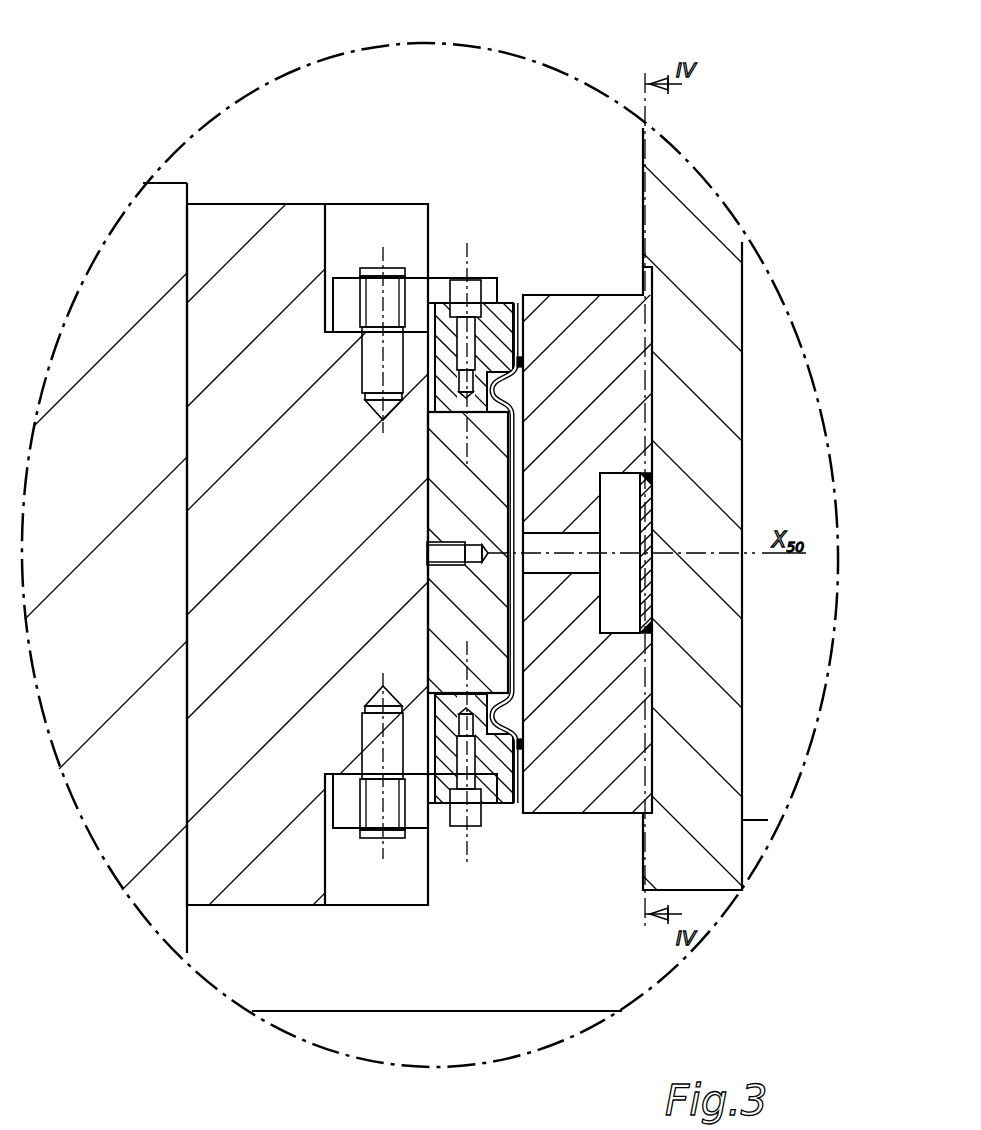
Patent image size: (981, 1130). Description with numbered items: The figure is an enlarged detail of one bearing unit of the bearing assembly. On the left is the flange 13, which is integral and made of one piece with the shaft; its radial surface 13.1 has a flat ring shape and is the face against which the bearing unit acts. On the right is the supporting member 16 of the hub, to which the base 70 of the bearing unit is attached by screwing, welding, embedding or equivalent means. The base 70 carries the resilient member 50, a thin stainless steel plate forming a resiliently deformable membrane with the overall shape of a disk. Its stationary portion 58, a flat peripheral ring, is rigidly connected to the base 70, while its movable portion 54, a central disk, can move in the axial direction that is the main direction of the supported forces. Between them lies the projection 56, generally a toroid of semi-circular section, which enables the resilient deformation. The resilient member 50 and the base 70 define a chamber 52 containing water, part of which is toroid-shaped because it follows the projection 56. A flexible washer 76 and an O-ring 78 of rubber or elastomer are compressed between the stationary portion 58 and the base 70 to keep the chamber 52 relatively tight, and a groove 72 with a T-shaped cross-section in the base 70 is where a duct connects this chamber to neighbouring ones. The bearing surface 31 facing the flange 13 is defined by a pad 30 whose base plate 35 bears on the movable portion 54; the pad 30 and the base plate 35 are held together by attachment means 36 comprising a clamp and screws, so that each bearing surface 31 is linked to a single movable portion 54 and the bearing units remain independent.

The flange 13 is at (106, 536).
The radial surface of the flange 13.1 is at (192, 237).
The supporting member 16 is at (682, 228).
The pad 30 is at (490, 565).
The bearing surface 31 is at (182, 268).
The base plate 35 is at (490, 565).
The attachment means 36 is at (403, 858).
The resilient member 50 is at (547, 152).
The chamber 52 is at (524, 737).
The movable portion 54 is at (560, 400).
The projection 56 is at (524, 382).
The stationary portion 58 is at (503, 380).
The base 70 is at (490, 565).
The groove 72 is at (617, 502).
The flexible washer 76 is at (511, 717).
The O-ring 78 is at (522, 747).